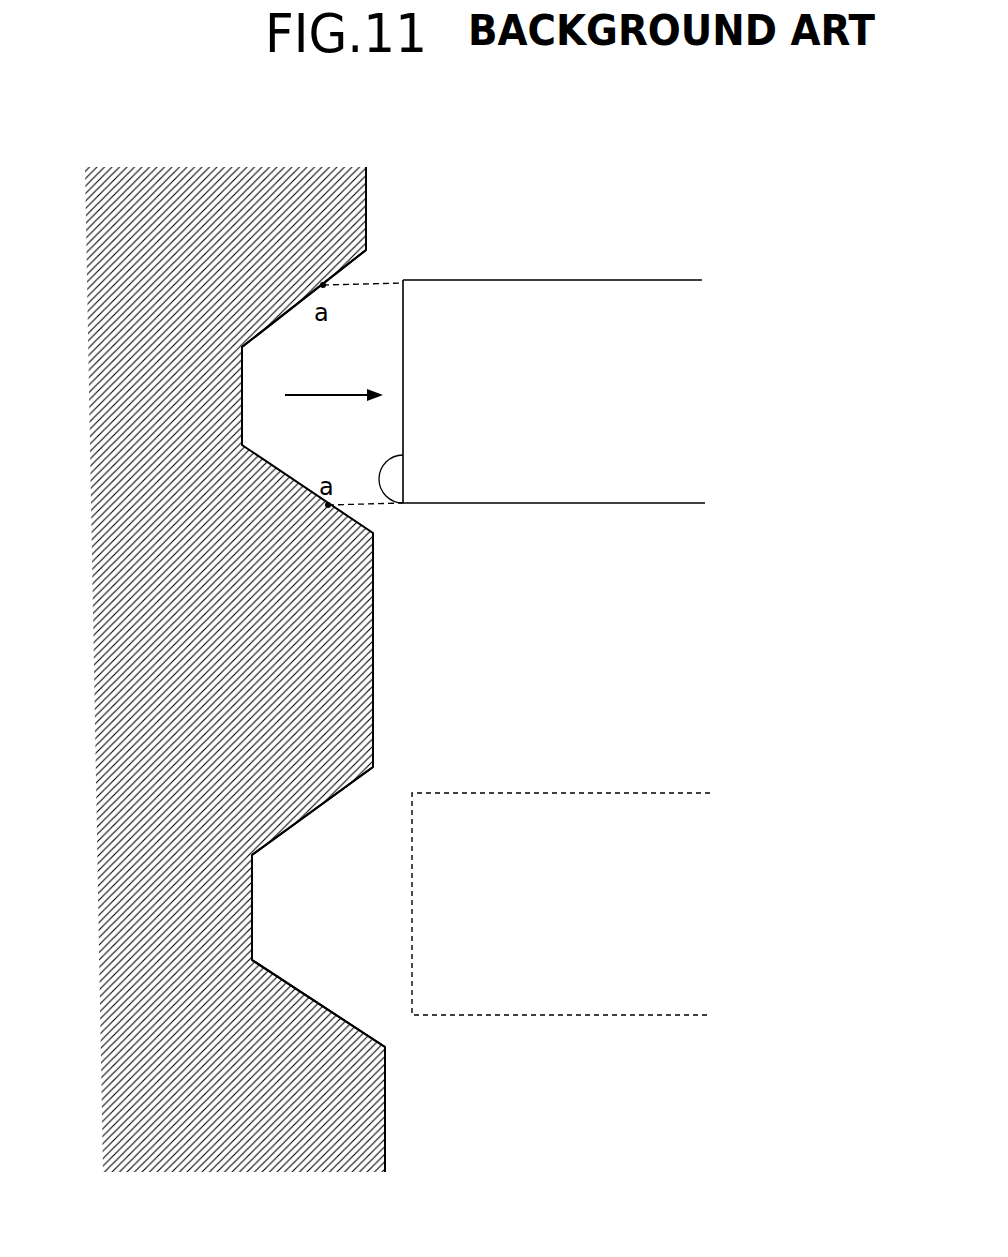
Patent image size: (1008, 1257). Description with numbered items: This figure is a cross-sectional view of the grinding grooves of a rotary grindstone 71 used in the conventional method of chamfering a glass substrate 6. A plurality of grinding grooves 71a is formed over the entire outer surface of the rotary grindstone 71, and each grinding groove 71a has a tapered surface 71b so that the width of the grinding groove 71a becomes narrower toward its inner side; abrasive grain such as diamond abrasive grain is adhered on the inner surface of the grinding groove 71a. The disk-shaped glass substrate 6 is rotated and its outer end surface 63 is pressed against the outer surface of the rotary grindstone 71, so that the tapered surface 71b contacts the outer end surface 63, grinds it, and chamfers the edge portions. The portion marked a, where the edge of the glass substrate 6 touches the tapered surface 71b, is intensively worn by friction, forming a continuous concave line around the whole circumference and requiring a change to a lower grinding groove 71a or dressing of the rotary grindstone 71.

The rotary grindstone 71 is at (366, 190).
The grinding groove 71a is at (242, 392).
The tapered surface 71b is at (255, 335).
The glass substrate 6 is at (651, 279).
The outer end surface 63 is at (381, 505).